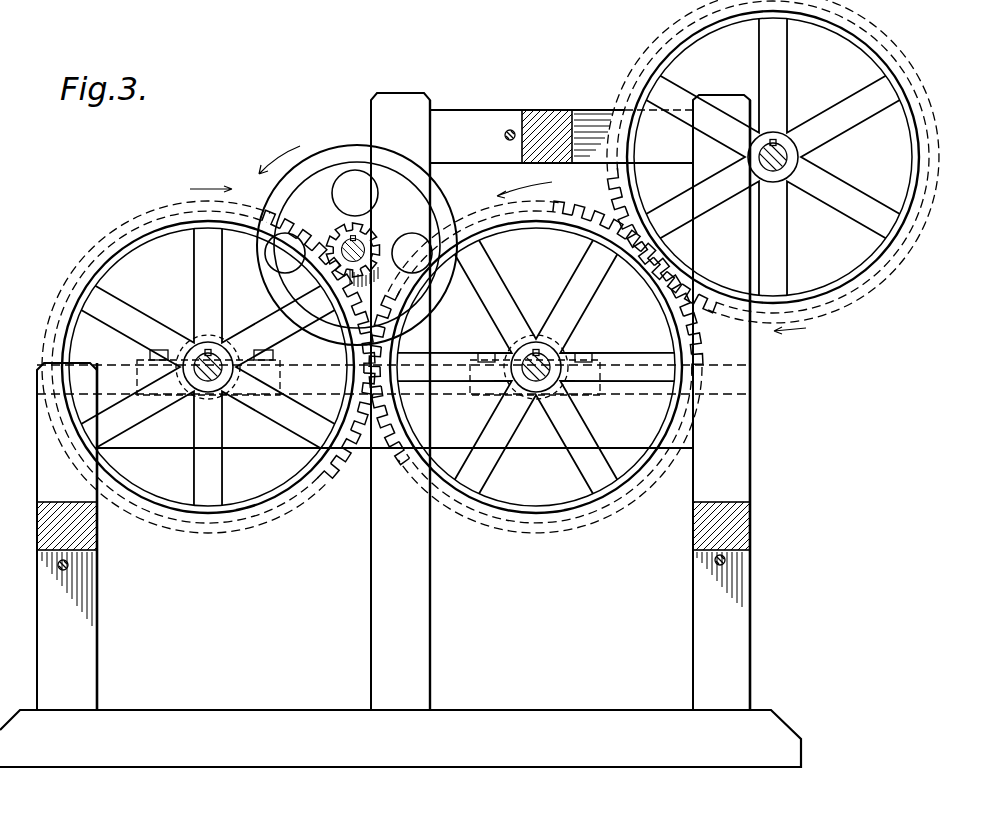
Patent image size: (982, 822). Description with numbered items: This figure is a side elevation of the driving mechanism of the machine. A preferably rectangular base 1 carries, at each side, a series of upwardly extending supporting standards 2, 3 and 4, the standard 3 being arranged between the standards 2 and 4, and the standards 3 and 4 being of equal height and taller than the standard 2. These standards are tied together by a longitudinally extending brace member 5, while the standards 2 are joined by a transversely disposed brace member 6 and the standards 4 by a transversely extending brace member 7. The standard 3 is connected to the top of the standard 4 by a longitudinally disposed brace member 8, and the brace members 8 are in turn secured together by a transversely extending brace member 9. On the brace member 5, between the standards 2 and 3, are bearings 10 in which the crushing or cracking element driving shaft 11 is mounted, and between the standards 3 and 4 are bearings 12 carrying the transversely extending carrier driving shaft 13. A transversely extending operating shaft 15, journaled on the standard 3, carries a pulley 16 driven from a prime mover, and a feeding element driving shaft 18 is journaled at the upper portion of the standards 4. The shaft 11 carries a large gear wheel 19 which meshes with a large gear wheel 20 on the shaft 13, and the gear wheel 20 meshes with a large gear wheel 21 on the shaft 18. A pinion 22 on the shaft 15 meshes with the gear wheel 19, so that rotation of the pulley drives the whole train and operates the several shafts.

The base 1 is at (561, 716).
The supporting standard 2 is at (88, 623).
The supporting standard 3 is at (420, 627).
The supporting standard 4 is at (695, 608).
The longitudinally extending brace member 5 is at (370, 438).
The transversely disposed brace member 6 is at (97, 541).
The transversely extending brace member 7 is at (750, 524).
The longitudinally disposed brace member 8 is at (466, 118).
The transversely extending brace member 9 is at (568, 101).
The bearing 10 is at (278, 361).
The crushing or cracking element driving shaft 11 is at (210, 382).
The bearing 12 is at (590, 390).
The carrier driving shaft 13 is at (533, 378).
The operating shaft 15 is at (366, 241).
The pulley 16 is at (437, 195).
The feeding element driving shaft 18 is at (792, 157).
The large gear wheel 19 is at (360, 374).
The large gear wheel 20 is at (648, 258).
The large gear wheel 21 is at (614, 183).
The pinion 22 is at (340, 228).